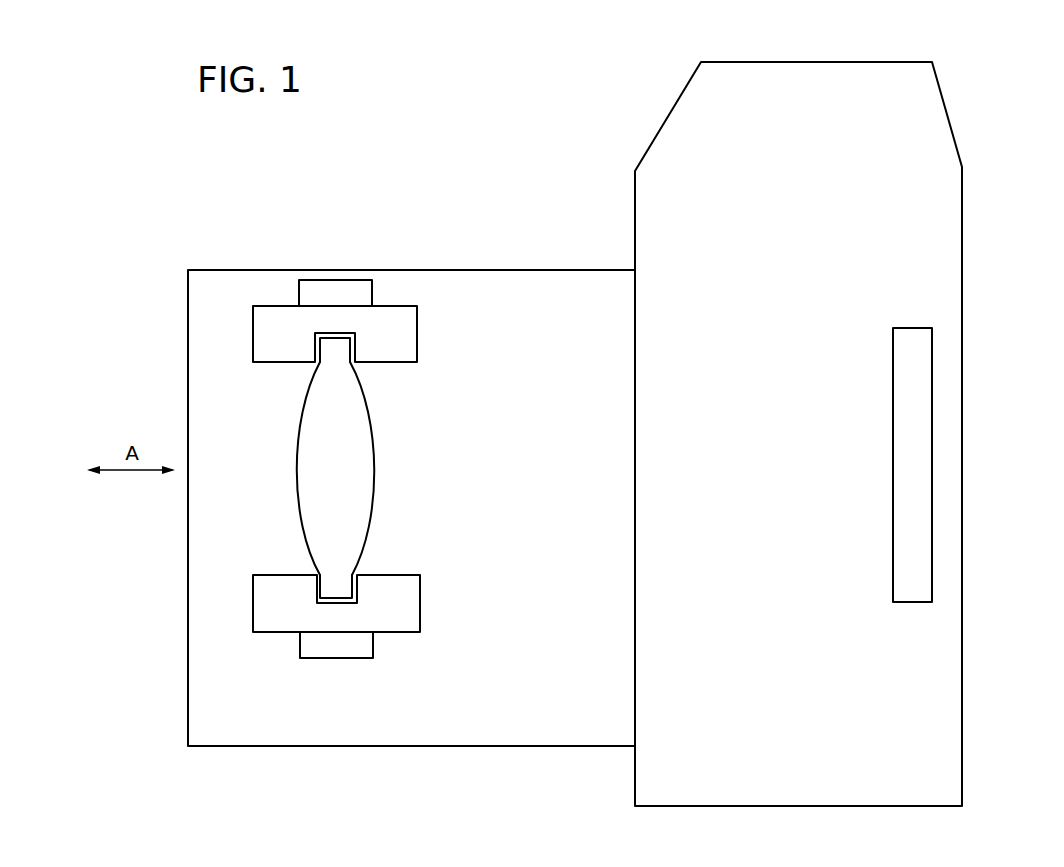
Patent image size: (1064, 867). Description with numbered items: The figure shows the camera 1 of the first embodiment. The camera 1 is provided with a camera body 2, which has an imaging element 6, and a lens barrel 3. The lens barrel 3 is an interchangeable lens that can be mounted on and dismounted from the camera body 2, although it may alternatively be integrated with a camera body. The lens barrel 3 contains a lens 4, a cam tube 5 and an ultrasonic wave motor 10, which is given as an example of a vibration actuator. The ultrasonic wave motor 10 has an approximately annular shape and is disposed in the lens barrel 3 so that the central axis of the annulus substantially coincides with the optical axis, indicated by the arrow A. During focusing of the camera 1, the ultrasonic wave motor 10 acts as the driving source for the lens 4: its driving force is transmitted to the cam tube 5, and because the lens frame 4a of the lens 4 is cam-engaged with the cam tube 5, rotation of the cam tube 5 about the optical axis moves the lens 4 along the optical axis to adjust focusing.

The camera 1 is at (975, 90).
The camera body 2 is at (950, 245).
The lens barrel 3 is at (548, 287).
The lens 4 is at (365, 470).
The lens frame 4a is at (337, 347).
The cam tube 5 is at (402, 334).
The imaging element 6 is at (900, 450).
The ultrasonic wave motor 10 is at (333, 291).